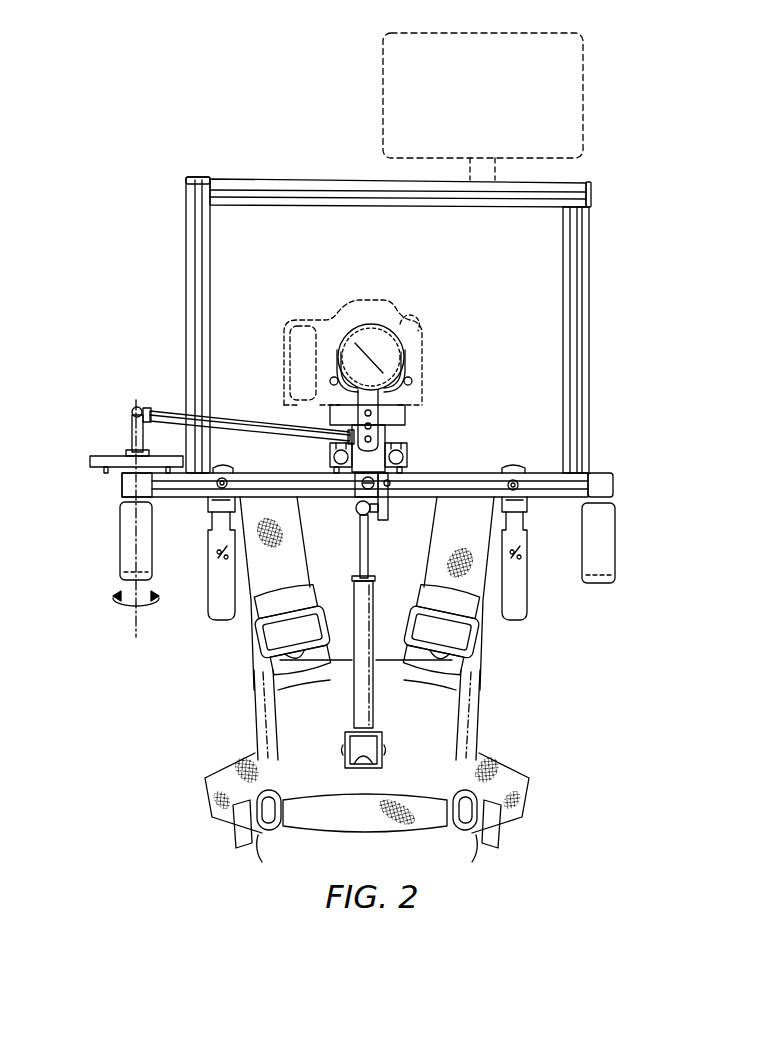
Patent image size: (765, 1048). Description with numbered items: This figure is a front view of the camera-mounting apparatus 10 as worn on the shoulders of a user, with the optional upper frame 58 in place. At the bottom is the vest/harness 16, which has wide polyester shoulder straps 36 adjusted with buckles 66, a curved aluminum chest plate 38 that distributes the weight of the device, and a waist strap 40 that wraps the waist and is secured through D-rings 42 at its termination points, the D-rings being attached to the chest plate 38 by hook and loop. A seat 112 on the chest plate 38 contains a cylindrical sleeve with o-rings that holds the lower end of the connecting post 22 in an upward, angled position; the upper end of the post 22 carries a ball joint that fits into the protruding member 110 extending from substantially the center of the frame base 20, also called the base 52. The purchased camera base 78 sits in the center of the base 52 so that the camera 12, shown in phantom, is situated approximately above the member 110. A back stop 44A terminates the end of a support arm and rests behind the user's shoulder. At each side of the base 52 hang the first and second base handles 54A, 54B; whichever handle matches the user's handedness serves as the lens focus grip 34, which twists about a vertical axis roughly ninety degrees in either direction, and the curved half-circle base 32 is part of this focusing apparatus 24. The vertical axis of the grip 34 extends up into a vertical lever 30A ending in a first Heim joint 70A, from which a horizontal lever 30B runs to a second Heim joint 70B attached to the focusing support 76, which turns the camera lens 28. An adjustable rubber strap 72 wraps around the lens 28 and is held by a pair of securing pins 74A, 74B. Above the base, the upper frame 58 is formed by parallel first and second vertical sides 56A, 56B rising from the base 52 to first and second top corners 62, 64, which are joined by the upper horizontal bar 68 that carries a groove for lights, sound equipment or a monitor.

The apparatus 10 is at (133, 163).
The camera 12 is at (320, 314).
The vest/harness 16 is at (250, 736).
The frame base 20 is at (603, 474).
The connecting post 22 is at (355, 707).
The focusing apparatus 24 is at (99, 437).
The camera lens 28 is at (388, 348).
The vertical lever 30A is at (133, 410).
The horizontal lever 30B is at (226, 425).
The curved base/disc 32 is at (90, 465).
The lens focus grip 34 is at (125, 522).
The shoulder straps 36 is at (255, 525).
The chest plate 38 is at (402, 714).
The waist strap 40 is at (210, 808).
The D-rings 42 is at (265, 835).
The first back stop 44A is at (222, 618).
The base of frame 52 is at (541, 473).
The first base handle 54A is at (126, 560).
The second base handle 54B is at (610, 558).
The first vertical side 56A is at (188, 232).
The second vertical side 56B is at (587, 236).
The upper frame 58 is at (278, 178).
The first top corner 62 is at (197, 176).
The second top corner 64 is at (592, 198).
The buckles 66 is at (256, 690).
The upper horizontal bar 68 is at (335, 179).
The first Heim joint 70A is at (142, 409).
The second Heim joint 70B is at (336, 454).
The adjustable rubber strap 72 is at (371, 323).
The first securing pin 74A is at (332, 387).
The second securing pin 74B is at (410, 388).
The focusing support 76 is at (390, 414).
The camera base 78 is at (410, 428).
The protruding member 110 is at (355, 474).
The seat for connecting post 112 is at (385, 750).